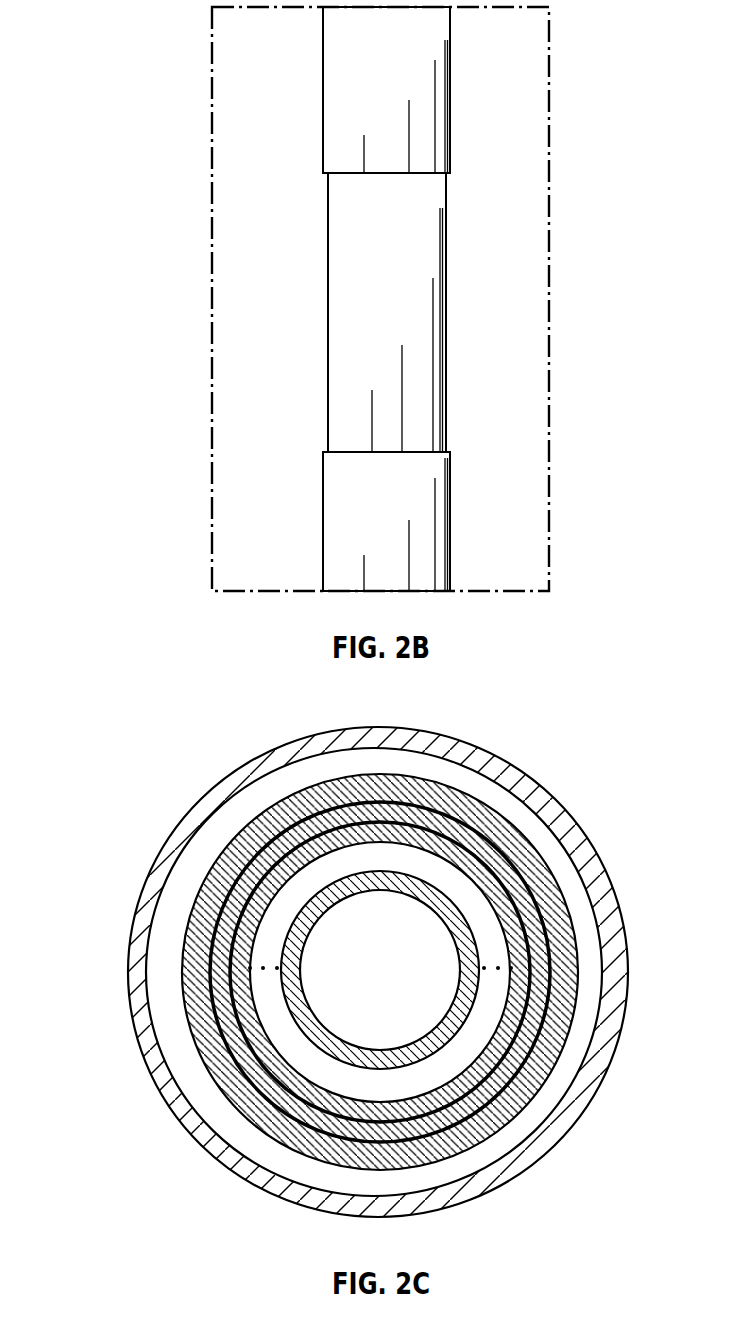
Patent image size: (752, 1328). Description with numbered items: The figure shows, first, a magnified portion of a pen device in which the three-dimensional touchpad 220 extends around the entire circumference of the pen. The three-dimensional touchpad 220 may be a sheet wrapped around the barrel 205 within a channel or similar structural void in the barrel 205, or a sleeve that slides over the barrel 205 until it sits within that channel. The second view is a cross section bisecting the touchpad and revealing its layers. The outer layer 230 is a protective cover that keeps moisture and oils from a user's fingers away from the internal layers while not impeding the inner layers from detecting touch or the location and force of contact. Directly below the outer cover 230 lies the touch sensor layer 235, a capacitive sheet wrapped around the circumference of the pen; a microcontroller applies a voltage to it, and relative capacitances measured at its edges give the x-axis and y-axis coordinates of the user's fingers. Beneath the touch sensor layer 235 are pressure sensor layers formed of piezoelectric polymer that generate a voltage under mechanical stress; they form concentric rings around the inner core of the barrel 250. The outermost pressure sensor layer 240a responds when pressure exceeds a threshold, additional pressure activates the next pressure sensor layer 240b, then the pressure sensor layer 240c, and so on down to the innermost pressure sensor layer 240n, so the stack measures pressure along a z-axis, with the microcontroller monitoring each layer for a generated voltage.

In FIG. 2B, the barrel 205 is at (451, 116).
In FIG. 2B, the three-dimensional touchpad 220 is at (335, 342).
In FIG. 2C, the outer layer 230 is at (512, 775).
In FIG. 2C, the touch sensor layer 235 is at (558, 848).
In FIG. 2C, the outermost pressure sensor layer 240a is at (200, 932).
In FIG. 2C, the next pressure sensor layer 240b is at (217, 993).
In FIG. 2C, the pressure sensor layer 240c is at (253, 1047).
In FIG. 2C, the innermost pressure sensor layer 240n is at (325, 1042).
In FIG. 2C, the inner core of the barrel 250 is at (400, 982).